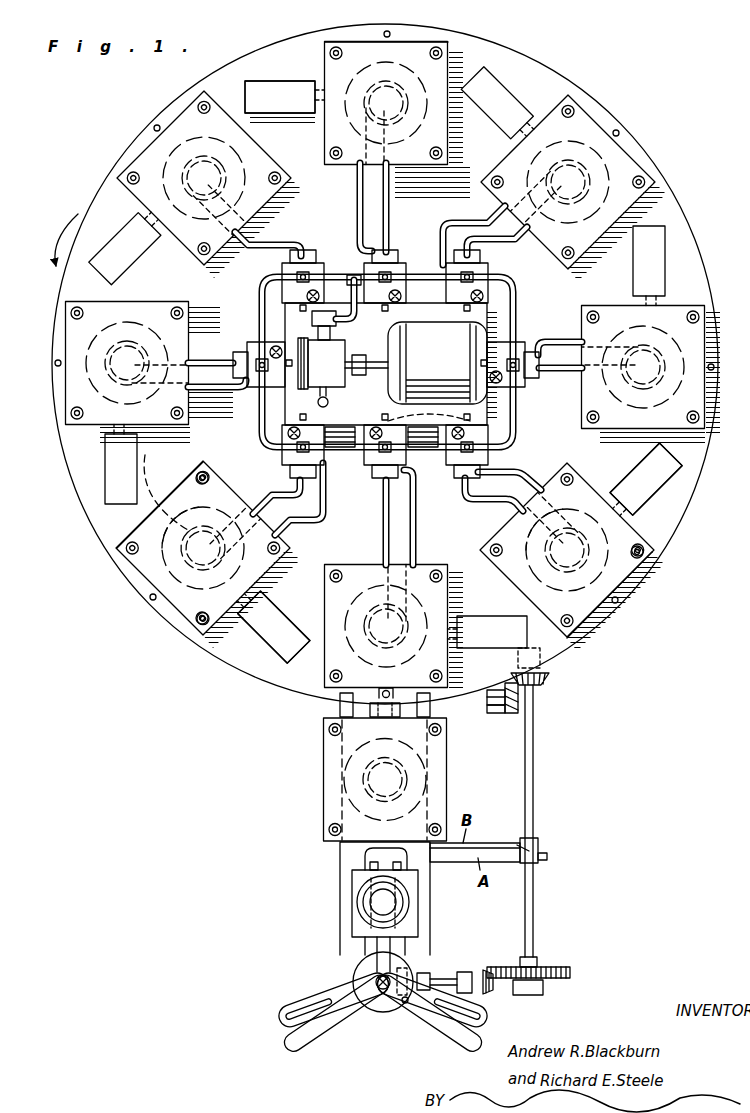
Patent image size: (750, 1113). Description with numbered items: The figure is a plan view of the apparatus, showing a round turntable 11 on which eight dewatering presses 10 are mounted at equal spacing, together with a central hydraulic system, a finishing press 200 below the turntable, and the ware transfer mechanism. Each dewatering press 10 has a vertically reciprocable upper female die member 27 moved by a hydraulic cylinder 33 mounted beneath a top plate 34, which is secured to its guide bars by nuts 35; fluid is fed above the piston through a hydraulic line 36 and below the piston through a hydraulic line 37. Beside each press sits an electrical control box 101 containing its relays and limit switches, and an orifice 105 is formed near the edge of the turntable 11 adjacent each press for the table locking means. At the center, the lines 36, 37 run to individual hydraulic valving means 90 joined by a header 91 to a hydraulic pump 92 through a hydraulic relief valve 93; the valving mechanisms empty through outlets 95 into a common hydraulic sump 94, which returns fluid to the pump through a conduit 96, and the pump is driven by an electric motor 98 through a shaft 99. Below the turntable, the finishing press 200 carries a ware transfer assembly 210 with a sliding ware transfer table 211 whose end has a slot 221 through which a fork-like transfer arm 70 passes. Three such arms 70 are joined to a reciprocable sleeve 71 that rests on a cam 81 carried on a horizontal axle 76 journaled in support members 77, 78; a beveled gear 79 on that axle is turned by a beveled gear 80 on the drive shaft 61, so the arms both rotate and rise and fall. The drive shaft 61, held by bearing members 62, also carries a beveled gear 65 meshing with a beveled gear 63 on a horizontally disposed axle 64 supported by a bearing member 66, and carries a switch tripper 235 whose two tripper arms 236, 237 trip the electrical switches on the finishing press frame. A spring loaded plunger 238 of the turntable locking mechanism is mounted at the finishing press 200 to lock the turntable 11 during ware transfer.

The dewatering press 10 is at (592, 111).
The turntable 11 is at (686, 204).
The upper female die member 27 is at (162, 577).
The hydraulic cylinder 33 is at (166, 492).
The top plate 34 is at (415, 46).
The nuts 35 is at (207, 473).
The hydraulic line 36 is at (561, 338).
The hydraulic line 37 is at (207, 362).
The drive shaft (horizontal axle) 61 is at (534, 776).
The bearing members 62 is at (545, 986).
The beveled gear 63 is at (520, 706).
The horizontally disposed axle 64 is at (486, 706).
The beveled gear 65 is at (546, 684).
The bearing member 66 is at (493, 706).
The fork-like transfer arms 70 is at (376, 946).
The reciprocable sleeve 71 is at (375, 979).
The horizontally disposed axle 76 is at (449, 977).
The journaled support member 77 is at (405, 1003).
The journaled support member 78 is at (468, 972).
The beveled gear 79 is at (491, 985).
The beveled gear 80 is at (554, 966).
The cam 81 is at (407, 972).
The hydraulic valving means 90 is at (316, 256).
The header 91 is at (262, 283).
The hydraulic pump 92 is at (300, 384).
The hydraulic relief valve 93 is at (311, 320).
The hydraulic sump 94 is at (285, 310).
The outlets 95 is at (429, 416).
The conduit 96 is at (329, 400).
The electric motor 98 is at (437, 363).
The shaft 99 is at (374, 356).
The electrical control box 101 is at (268, 86).
The orifice 105 is at (55, 364).
The finishing press 200 is at (321, 790).
The ware transfer assembly 210 is at (339, 898).
The sliding ware transfer table 211 is at (420, 912).
The slot 221 is at (365, 858).
The switch tripper 235 is at (541, 846).
The tripper arm 236 is at (548, 858).
The tripper arm 237 is at (517, 845).
The spring loaded plunger 238 is at (390, 692).